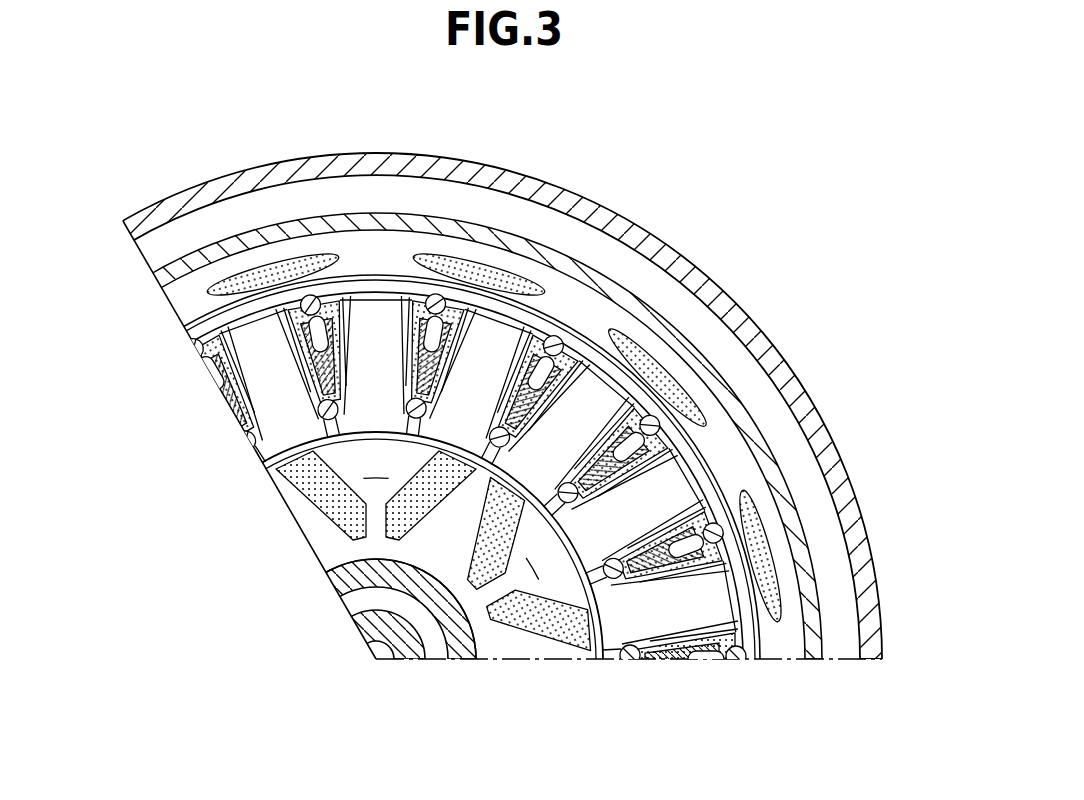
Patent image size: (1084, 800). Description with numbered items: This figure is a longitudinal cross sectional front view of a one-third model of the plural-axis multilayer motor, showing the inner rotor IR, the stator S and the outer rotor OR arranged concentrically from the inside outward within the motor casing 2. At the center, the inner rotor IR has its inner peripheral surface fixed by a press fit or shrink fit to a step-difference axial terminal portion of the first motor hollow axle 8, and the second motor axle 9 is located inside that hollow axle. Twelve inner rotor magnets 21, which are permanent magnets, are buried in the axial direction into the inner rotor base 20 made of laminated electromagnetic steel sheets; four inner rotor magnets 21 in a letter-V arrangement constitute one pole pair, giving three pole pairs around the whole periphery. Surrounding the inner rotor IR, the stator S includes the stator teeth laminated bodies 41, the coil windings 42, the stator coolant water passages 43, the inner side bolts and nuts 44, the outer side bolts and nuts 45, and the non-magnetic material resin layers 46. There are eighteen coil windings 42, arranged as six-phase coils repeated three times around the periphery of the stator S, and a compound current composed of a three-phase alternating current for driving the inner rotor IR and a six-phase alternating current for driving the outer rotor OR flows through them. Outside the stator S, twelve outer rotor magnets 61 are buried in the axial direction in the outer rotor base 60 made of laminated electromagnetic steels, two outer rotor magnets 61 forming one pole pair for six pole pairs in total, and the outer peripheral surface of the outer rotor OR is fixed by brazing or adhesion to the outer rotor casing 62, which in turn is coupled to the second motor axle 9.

The motor casing 2 is at (127, 238).
The first motor hollow axle 8 is at (328, 589).
The second motor axle 9 is at (352, 631).
The inner rotor base 20 is at (498, 636).
The inner rotor magnets 21 is at (313, 516).
The stator teeth laminated bodies 41 is at (267, 358).
The coil windings 42 is at (278, 294).
The stator coolant water passages 43 is at (314, 290).
The inner side bolts and nuts 44 is at (331, 409).
The outer side bolts and nuts 45 is at (307, 304).
The non-magnetic material resin layers 46 is at (302, 297).
The outer rotor base 60 is at (742, 464).
The outer rotor magnets 61 is at (292, 309).
The outer rotor casing 62 is at (813, 628).
The outer rotor OR is at (160, 310).
The inner rotor IR is at (297, 538).
The stator S is at (218, 407).